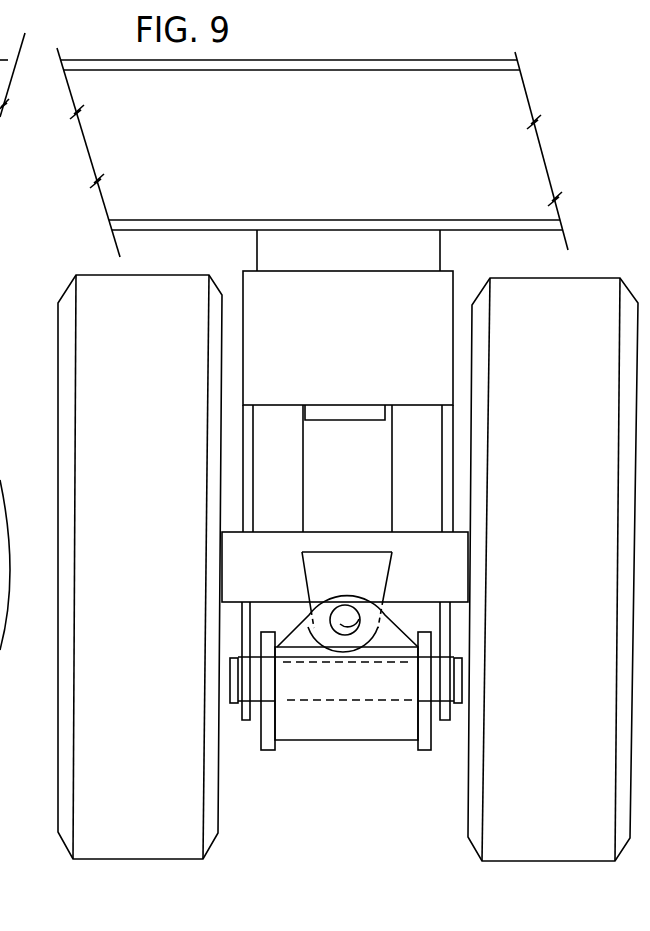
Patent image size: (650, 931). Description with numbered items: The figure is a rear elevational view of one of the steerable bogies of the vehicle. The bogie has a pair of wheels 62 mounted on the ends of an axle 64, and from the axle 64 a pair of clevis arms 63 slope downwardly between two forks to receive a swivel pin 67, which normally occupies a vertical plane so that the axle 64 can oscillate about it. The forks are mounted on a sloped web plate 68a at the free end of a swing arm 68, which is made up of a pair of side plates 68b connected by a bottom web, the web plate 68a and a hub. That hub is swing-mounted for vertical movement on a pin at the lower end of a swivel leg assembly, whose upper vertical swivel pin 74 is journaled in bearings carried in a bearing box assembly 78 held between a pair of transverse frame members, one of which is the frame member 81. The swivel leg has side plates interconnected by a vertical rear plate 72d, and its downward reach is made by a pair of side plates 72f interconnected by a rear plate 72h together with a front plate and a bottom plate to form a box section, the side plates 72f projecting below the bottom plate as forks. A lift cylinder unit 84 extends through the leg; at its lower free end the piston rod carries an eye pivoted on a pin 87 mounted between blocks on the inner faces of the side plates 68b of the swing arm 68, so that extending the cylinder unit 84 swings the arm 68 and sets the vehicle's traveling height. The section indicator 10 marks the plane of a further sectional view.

The section line 10- 10 is at (382, 23).
The transverse frame member 81 is at (288, 141).
The bearing box assembly 78 is at (250, 247).
The wheels 62 is at (61, 305).
The vertical rear plate 72d is at (332, 354).
The rear plate 72h is at (294, 467).
The lift cylinder unit 84 is at (349, 501).
The upper vertical swivel pin 74 is at (318, 416).
The axle 64 is at (267, 579).
The clevis arms 63 is at (348, 587).
The swivel pin 67 is at (350, 624).
The pin 87 is at (234, 704).
The sloped web plate 68a is at (346, 710).
The side plates 68b is at (268, 746).
The swing arm 68 is at (390, 748).
The side plates 72f is at (346, 700).